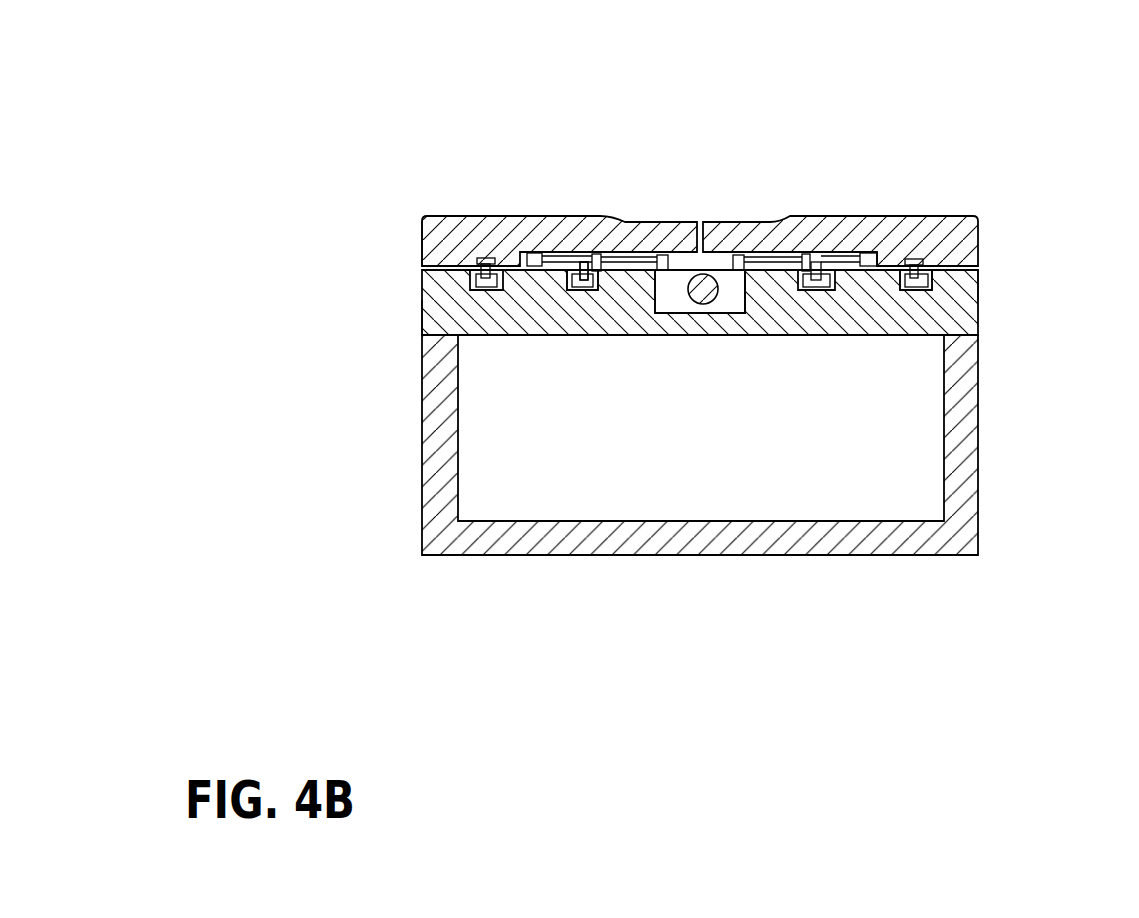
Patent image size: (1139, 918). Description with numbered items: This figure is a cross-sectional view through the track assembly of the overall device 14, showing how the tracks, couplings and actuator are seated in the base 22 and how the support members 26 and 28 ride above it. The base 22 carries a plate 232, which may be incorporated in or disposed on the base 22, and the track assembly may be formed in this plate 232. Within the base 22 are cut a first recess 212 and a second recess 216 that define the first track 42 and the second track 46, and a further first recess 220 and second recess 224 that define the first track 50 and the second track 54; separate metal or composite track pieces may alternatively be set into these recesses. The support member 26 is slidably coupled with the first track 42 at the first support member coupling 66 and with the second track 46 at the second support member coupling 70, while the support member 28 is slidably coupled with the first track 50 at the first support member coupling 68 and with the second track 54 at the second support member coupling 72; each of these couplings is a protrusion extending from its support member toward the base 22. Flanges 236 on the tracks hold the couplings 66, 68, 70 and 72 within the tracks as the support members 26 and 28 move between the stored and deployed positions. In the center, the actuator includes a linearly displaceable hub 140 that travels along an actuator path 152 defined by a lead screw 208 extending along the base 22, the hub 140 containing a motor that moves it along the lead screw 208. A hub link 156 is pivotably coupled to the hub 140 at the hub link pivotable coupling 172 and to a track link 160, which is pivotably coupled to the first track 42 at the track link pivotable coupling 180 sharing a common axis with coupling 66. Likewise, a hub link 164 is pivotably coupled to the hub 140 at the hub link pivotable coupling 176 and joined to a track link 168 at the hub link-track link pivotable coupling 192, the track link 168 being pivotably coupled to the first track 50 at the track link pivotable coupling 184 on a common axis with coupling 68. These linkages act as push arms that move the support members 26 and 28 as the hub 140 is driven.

The fluid ejection assembly 14 is at (940, 122).
The base 22 is at (979, 479).
The support member 26 is at (979, 236).
The support member 28 is at (420, 224).
The first track 42 is at (836, 292).
The second track 46 is at (979, 320).
The first track 50 is at (583, 288).
The second track 54 is at (470, 266).
The first support member coupling 66 is at (843, 256).
The first support member coupling 68 is at (602, 252).
The second support member coupling 70 is at (979, 283).
The second support member coupling 72 is at (485, 257).
The linearly displaceable hub 140 is at (688, 267).
The actuator path 152 is at (680, 313).
The hub link 156 is at (762, 270).
The track link 160 is at (860, 253).
The hub link 164 is at (630, 272).
The track link 168 is at (588, 262).
The hub link pivotable coupling 172 is at (745, 255).
The hub link pivotable coupling 176 is at (661, 257).
The track link pivotable coupling 180 is at (808, 282).
The track link pivotable coupling 184 is at (585, 291).
The hub link-track link pivotable coupling 192 is at (535, 253).
The lead screw 208 is at (708, 279).
The first recess 212 is at (820, 290).
The second recess 216 is at (900, 290).
The first recess 220 is at (595, 292).
The second recess 224 is at (473, 295).
The plate 232 is at (443, 317).
The flanges 236 is at (905, 258).